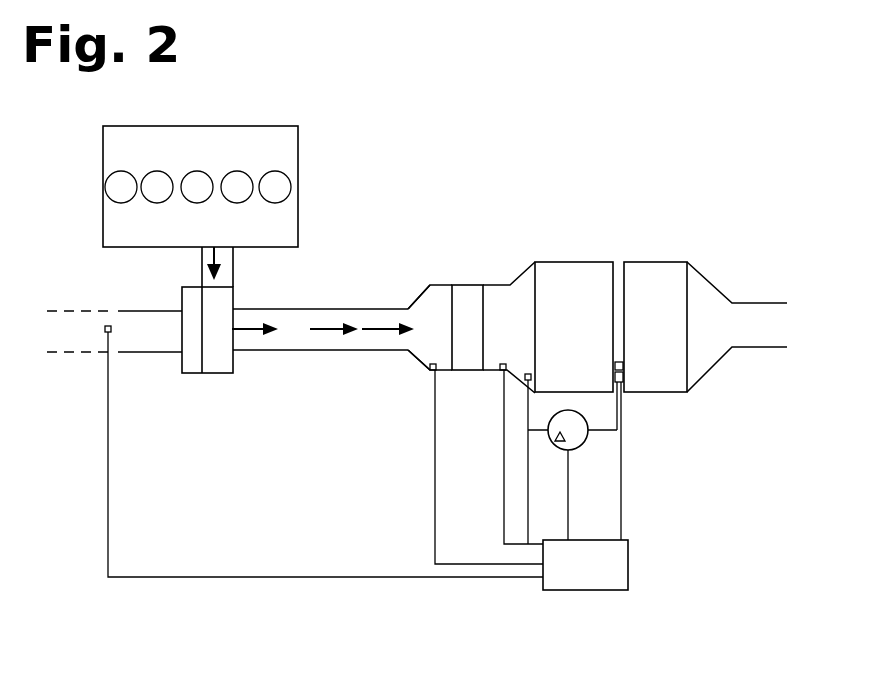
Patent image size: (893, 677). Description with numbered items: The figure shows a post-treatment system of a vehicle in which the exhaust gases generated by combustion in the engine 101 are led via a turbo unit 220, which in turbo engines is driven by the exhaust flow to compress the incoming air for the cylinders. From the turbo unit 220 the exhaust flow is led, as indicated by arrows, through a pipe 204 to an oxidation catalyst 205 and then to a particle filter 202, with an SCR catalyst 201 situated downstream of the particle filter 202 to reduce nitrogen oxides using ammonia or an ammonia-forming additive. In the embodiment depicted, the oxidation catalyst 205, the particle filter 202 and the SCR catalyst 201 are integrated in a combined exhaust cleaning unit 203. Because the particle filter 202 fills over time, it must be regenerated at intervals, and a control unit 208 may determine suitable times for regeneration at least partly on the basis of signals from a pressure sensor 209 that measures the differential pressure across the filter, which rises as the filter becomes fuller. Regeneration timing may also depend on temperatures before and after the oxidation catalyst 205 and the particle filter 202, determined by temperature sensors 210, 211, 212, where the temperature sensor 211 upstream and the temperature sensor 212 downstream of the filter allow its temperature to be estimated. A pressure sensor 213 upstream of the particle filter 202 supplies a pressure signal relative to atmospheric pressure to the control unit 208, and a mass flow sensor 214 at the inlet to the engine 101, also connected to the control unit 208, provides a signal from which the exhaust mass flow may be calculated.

The engine 101 is at (258, 138).
The SCR catalyst 201 is at (680, 278).
The particle filter 202 is at (588, 270).
The combined exhaust cleaning unit 203 is at (665, 260).
The pipe 204 is at (373, 317).
The oxidation catalyst 205 is at (480, 285).
The control unit 208 is at (580, 582).
The pressure sensor 209 is at (583, 435).
The temperature sensor 210 is at (432, 370).
The temperature sensor 211 is at (501, 369).
The temperature sensor 212 is at (622, 373).
The pressure sensor 213 is at (525, 383).
The mass flow sensor 214 is at (110, 328).
The turbo unit 220 is at (207, 373).